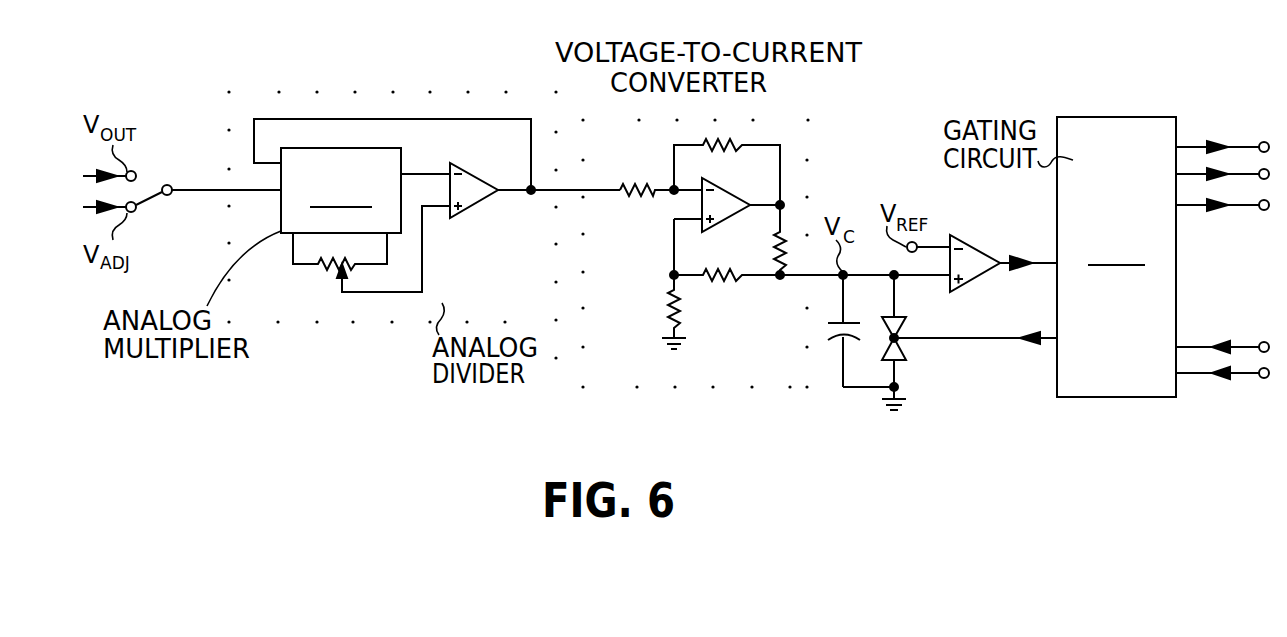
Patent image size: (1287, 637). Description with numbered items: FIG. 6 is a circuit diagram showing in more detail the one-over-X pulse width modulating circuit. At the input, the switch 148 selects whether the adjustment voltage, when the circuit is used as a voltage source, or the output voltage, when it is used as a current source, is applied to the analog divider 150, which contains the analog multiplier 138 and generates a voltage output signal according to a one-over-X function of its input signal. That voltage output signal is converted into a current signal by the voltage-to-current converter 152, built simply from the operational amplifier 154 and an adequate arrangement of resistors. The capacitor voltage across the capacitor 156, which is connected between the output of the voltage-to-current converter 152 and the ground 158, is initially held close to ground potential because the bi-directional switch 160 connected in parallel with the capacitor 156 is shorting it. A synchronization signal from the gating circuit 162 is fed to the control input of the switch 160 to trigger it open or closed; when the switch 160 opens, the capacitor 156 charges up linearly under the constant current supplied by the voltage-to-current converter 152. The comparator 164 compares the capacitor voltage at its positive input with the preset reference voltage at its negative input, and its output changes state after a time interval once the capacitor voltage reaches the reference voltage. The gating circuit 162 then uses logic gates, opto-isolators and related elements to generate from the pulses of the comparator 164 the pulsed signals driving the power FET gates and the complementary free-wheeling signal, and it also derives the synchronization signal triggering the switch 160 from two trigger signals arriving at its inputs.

The analog multiplier 138 is at (341, 190).
The switch 148 is at (151, 202).
The analog divider 150 is at (332, 345).
The voltage-to-current converter 152 is at (664, 402).
The operational amplifier 154 is at (728, 210).
The capacitor 156 is at (828, 342).
The ground 158 is at (903, 406).
The bi-directional switch 160 is at (905, 344).
The gating circuit 162 is at (1163, 257).
The comparator 164 is at (976, 254).